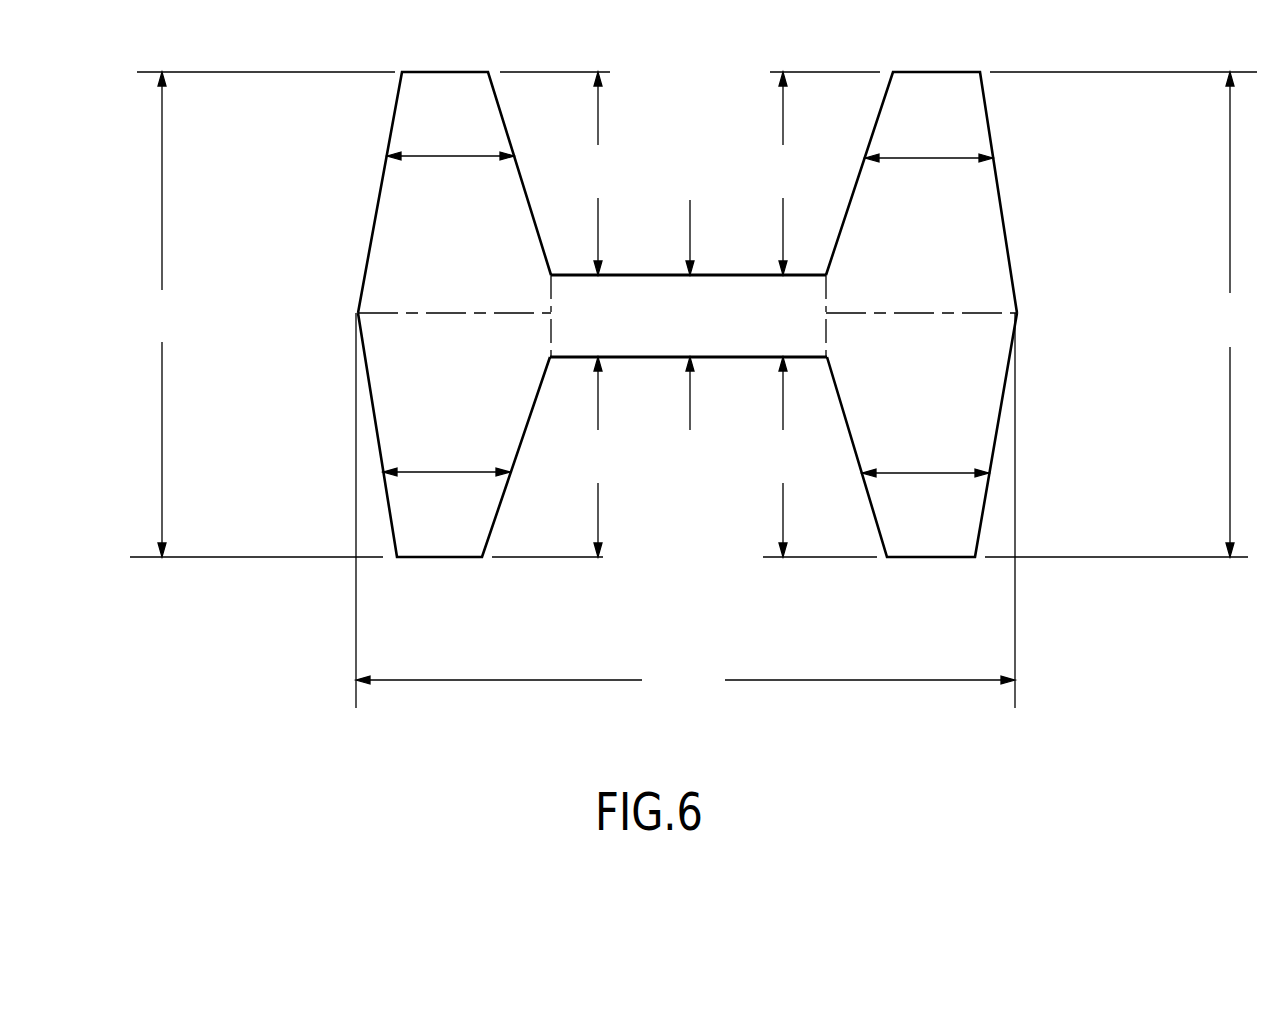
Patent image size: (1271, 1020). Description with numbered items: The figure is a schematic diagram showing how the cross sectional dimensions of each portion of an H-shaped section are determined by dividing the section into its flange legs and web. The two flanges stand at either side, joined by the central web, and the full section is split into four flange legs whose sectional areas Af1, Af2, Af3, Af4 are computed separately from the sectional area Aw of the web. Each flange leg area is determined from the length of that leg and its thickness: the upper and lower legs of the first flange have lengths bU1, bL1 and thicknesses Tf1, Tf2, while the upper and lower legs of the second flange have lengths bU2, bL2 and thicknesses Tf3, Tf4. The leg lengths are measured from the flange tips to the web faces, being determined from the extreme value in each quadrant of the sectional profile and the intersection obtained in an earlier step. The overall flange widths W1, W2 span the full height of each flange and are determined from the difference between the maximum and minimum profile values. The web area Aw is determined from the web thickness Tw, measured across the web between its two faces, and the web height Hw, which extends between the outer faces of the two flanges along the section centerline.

The sectional area of first flange leg Af1 is at (398, 212).
The sectional area of second flange leg Af2 is at (400, 408).
The sectional area of third flange leg Af3 is at (982, 232).
The sectional area of fourth flange leg Af4 is at (985, 377).
The sectional area of web Aw is at (732, 273).
The web thickness Tw is at (686, 315).
The thickness of first flange leg Tf1 is at (450, 137).
The thickness of second flange leg Tf2 is at (446, 452).
The thickness of third flange leg Tf3 is at (929, 139).
The thickness of fourth flange leg Tf4 is at (925, 454).
The length of upper first flange leg bU1 is at (603, 173).
The length of upper second flange leg bU2 is at (783, 173).
The length of lower first flange leg bL1 is at (595, 457).
The length of lower second flange leg bL2 is at (772, 457).
The first flange width W1 is at (165, 314).
The second flange width W2 is at (1231, 314).
The web height Hw is at (685, 510).